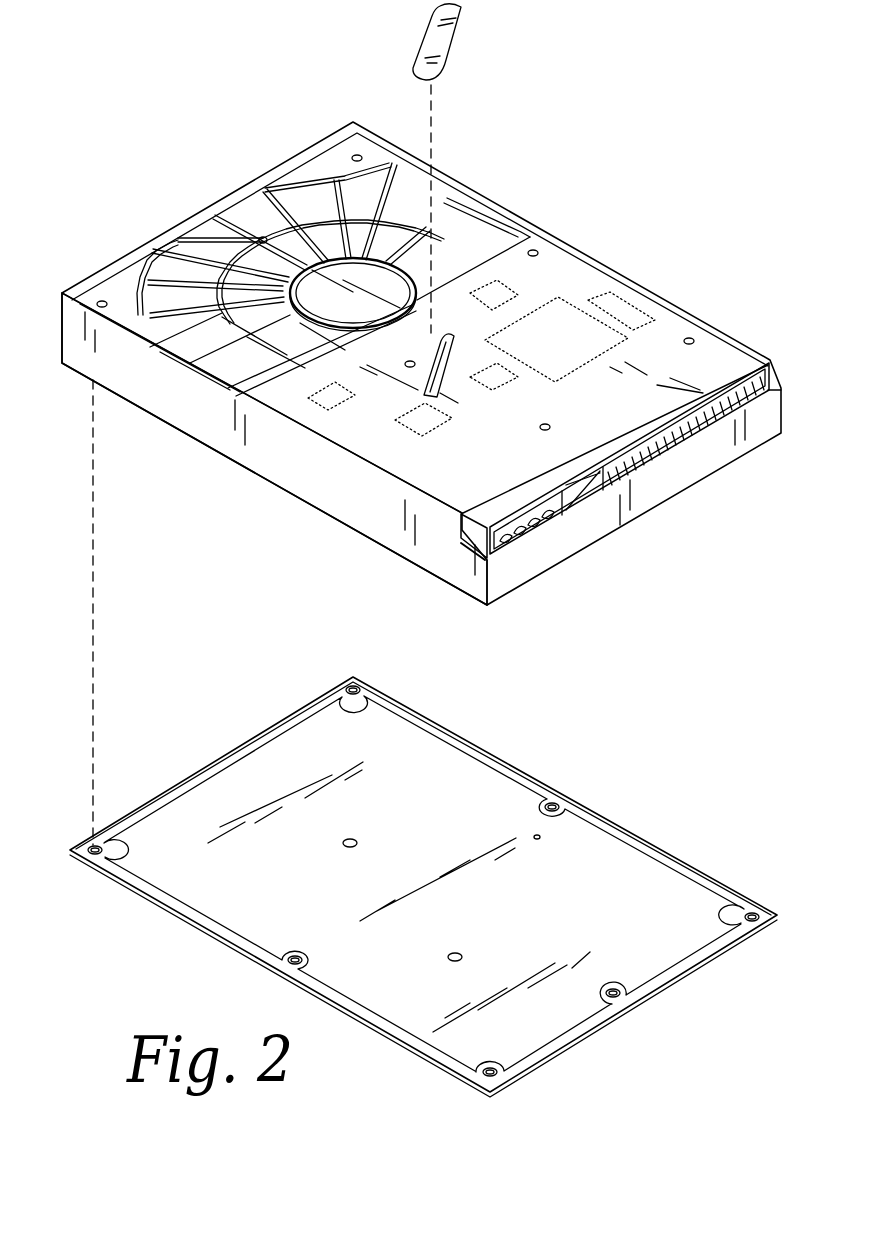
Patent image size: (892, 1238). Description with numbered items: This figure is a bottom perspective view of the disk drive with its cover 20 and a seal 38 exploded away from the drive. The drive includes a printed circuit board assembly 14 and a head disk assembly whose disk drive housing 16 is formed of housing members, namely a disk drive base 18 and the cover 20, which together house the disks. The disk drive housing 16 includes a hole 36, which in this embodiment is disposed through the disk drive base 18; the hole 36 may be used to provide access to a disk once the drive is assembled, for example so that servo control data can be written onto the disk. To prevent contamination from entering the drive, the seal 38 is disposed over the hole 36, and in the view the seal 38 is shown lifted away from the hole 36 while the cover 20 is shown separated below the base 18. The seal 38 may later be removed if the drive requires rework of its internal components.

The printed circuit board assembly 14 is at (673, 325).
The disk drive housing 16 is at (203, 428).
The disk drive base 18 is at (158, 403).
The cover 20 is at (457, 770).
The hole 36 is at (422, 393).
The seal 38 is at (421, 38).